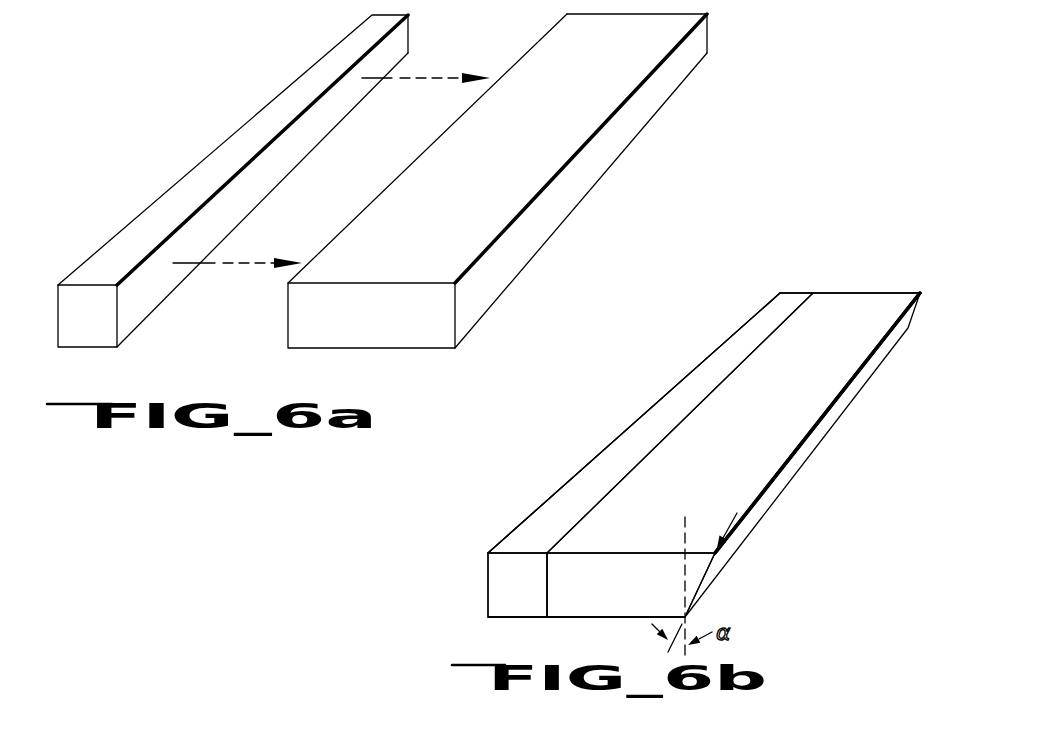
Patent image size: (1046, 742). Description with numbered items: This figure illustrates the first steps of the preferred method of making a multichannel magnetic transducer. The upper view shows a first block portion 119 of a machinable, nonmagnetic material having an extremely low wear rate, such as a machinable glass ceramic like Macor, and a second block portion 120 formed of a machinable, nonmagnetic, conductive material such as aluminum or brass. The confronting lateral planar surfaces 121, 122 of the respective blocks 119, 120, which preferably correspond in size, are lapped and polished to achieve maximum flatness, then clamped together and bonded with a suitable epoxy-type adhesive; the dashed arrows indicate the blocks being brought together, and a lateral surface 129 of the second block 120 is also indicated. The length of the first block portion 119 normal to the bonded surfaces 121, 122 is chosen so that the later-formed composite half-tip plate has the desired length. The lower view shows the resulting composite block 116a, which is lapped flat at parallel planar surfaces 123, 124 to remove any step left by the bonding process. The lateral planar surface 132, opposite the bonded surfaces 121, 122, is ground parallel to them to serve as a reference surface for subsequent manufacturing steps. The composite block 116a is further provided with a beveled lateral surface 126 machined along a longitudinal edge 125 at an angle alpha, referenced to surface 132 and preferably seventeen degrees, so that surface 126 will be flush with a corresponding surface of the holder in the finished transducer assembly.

In FIG. 6B, the composite block 116a is at (692, 350).
In FIG. 6A, the first block portion 119 is at (258, 120).
In FIG. 6B, the first block portion 119 is at (770, 310).
In FIG. 6A, the second block portion 120 is at (527, 156).
In FIG. 6B, the second block portion 120 is at (746, 449).
In FIG. 6A, the lateral planar surface 121 is at (262, 190).
In FIG. 6B, the lateral planar surface 121 is at (813, 293).
In FIG. 6A, the lateral planar surface 122 is at (449, 127).
In FIG. 6B, the lateral planar surface 122 is at (698, 396).
In FIG. 6B, the parallel planar surface 123 is at (882, 300).
In FIG. 6B, the parallel planar surface 124 is at (563, 612).
In FIG. 6B, the longitudinal edge 125 is at (862, 364).
In FIG. 6B, the beveled lateral surface 126 is at (850, 397).
In FIG. 6A, the side face of block 129 is at (635, 127).
In FIG. 6B, the lateral planar surface 132 is at (605, 448).